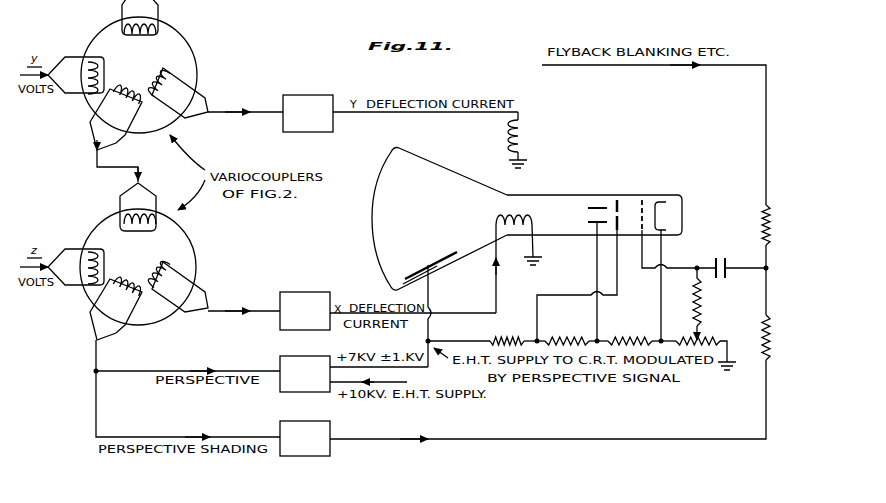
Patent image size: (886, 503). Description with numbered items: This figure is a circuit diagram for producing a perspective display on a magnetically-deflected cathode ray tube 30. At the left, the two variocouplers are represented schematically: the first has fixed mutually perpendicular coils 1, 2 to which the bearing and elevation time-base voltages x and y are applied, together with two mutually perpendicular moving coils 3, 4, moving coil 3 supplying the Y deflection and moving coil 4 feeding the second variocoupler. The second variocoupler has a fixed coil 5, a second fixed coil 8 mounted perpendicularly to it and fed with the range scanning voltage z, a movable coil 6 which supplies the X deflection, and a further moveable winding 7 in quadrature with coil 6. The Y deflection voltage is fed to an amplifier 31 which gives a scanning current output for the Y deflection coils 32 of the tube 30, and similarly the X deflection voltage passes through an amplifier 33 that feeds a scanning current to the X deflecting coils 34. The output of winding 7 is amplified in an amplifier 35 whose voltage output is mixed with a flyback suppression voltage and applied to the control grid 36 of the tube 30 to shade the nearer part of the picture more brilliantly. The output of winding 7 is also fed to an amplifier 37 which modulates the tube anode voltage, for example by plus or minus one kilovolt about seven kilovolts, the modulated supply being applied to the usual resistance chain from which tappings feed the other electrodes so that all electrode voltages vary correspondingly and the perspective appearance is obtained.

The fixed coil 1 is at (149, 42).
The fixed coil 2 is at (99, 73).
The moving coil 3 is at (163, 77).
The moving coil 4 is at (128, 88).
The fixed coil 5 is at (145, 233).
The movable coil 6 is at (165, 268).
The moveable winding 7 is at (133, 283).
The second fixed coil 8 is at (100, 260).
The magnetically-deflected tube 30 is at (371, 241).
The amplifier 31 is at (306, 95).
The Y deflection coils 32 is at (523, 135).
The amplifier 33 is at (301, 292).
The X deflecting coils 34 is at (520, 210).
The amplifier 35 is at (290, 421).
The control grid 36 is at (645, 202).
The amplifier 37 is at (283, 356).